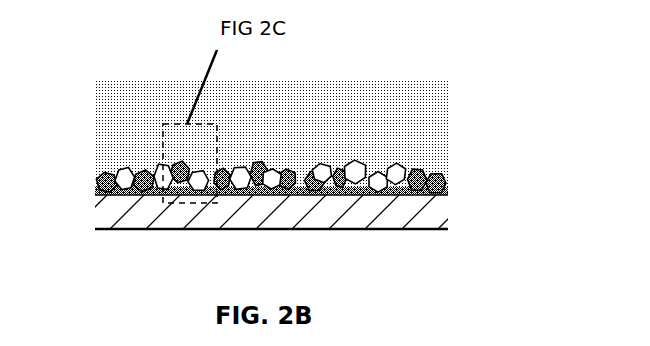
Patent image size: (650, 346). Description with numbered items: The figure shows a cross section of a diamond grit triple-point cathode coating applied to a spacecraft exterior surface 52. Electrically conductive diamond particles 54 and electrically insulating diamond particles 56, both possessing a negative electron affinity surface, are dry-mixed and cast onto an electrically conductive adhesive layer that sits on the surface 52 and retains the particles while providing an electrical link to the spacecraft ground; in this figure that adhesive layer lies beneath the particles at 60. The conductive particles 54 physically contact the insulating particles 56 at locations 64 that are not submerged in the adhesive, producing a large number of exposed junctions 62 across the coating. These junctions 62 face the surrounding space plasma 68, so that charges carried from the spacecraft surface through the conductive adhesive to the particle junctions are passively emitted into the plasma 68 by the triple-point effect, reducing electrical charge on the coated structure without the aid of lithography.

The spacecraft exterior surface 52 is at (447, 220).
The electrically conductive diamond particles 54 is at (438, 173).
The electrically insulating diamond particles 56 is at (399, 165).
The binder layer 60 is at (418, 196).
The exposed junctions 62 is at (171, 160).
The locations not submerged in the adhesive medium 64 is at (113, 168).
The space plasma 68 is at (396, 81).